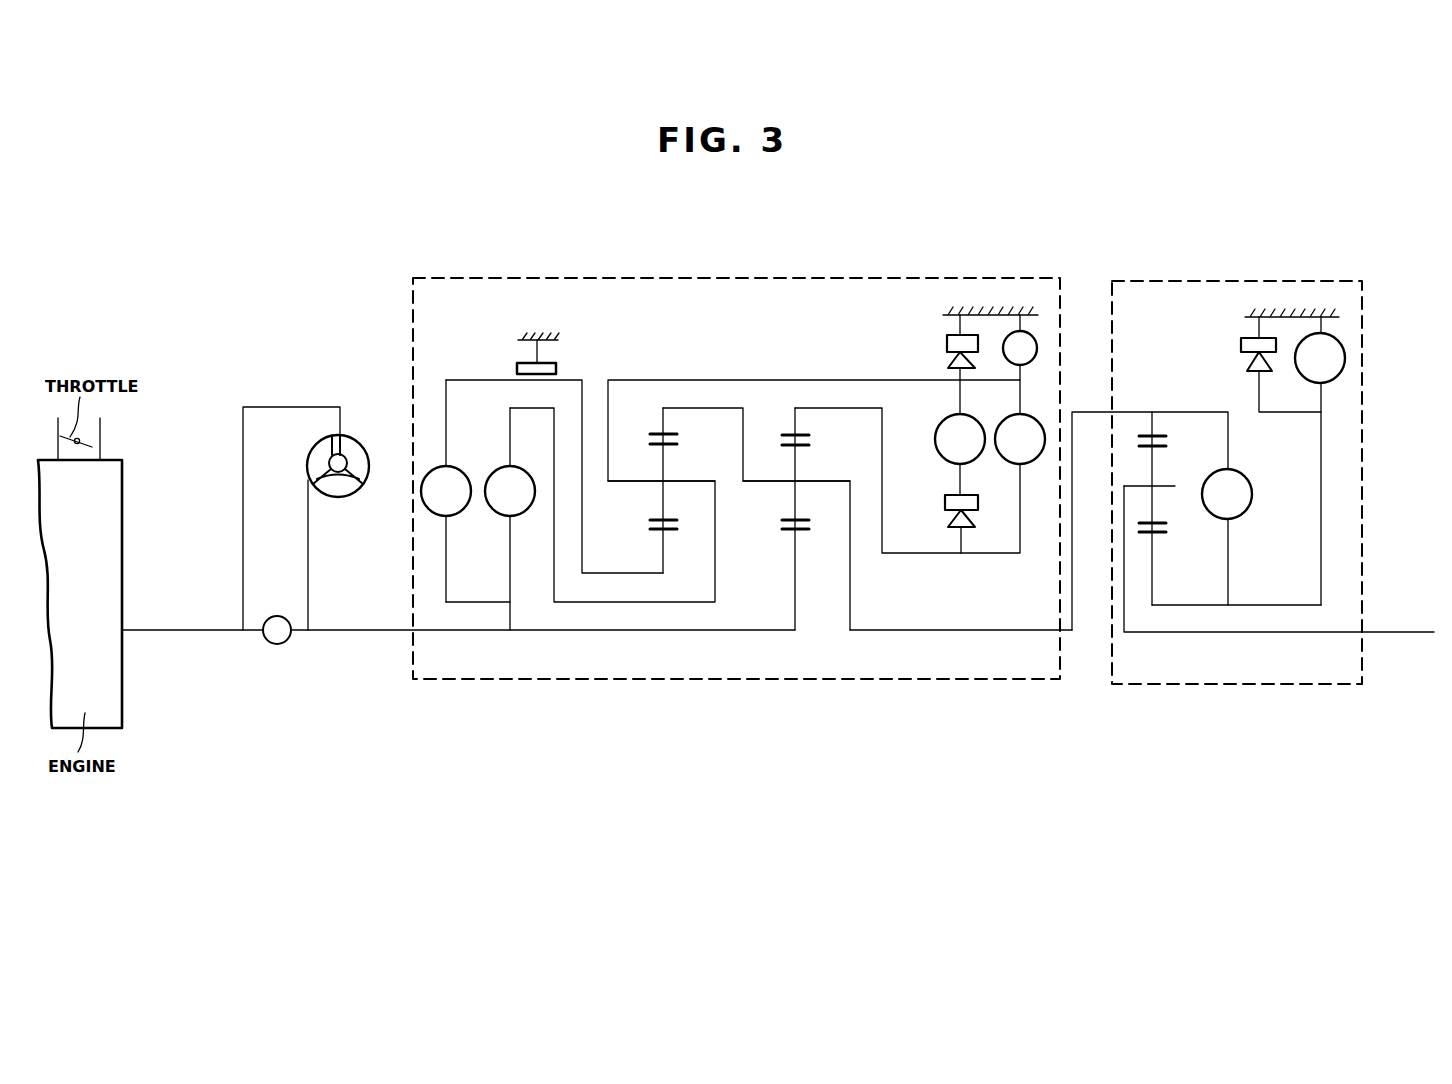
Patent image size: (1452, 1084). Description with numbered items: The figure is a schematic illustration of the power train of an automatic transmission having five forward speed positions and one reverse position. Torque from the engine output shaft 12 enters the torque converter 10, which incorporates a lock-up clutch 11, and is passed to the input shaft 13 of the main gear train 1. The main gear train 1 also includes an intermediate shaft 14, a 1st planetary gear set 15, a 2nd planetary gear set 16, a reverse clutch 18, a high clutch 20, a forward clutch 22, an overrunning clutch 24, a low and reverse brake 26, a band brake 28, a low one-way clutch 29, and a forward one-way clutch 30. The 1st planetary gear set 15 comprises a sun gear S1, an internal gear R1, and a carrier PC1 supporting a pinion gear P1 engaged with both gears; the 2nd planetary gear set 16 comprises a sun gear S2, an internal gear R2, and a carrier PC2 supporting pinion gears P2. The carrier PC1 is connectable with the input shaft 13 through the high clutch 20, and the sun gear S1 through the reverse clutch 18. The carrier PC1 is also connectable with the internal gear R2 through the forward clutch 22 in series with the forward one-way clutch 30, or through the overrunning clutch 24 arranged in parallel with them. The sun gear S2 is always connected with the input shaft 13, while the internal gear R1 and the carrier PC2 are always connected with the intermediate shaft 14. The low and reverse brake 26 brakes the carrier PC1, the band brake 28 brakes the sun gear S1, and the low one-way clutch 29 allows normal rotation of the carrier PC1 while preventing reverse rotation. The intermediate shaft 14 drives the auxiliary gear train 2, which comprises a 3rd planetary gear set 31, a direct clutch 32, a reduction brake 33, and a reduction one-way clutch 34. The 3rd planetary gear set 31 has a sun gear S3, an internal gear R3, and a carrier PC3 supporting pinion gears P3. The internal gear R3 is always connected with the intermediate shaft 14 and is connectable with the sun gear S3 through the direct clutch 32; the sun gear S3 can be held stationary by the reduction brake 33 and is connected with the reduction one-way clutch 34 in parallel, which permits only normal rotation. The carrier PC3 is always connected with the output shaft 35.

The main gear train 1 is at (727, 276).
The auxiliary gear train 2 is at (1261, 280).
The torque converter 10 is at (360, 440).
The lock-up clutch 11 is at (270, 645).
The engine output shaft 12 is at (189, 627).
The input shaft 13 is at (377, 633).
The intermediate shaft 14 is at (912, 630).
The 1st planetary gear set 15 is at (658, 443).
The 2nd planetary gear set 16 is at (795, 471).
The reverse clutch 18 is at (462, 467).
The high clutch 20 is at (500, 520).
The forward clutch 22 is at (942, 462).
The overrunning clutch 24 is at (1027, 464).
The low and reverse brake 26 is at (1023, 366).
The band brake 28 is at (540, 350).
The low one-way clutch 29 is at (945, 342).
The forward one-way clutch 30 is at (947, 503).
The 3rd planetary gear set 31 is at (1167, 473).
The direct clutch 32 is at (1247, 488).
The reduction brake 33 is at (1329, 385).
The reduction one-way clutch 34 is at (1241, 344).
The output shaft 35 is at (1393, 631).
The internal gear R1 is at (667, 422).
The carrier PC1 is at (665, 462).
The pinion gear P1 is at (660, 505).
The sun gear S1 is at (663, 537).
The internal gear R2 is at (799, 422).
The carrier PC2 is at (799, 462).
The pinion gears P2 is at (792, 510).
The sun gear S2 is at (797, 542).
The internal gear R3 is at (1161, 436).
The carrier PC3 is at (1167, 468).
The pinion gears P3 is at (1154, 516).
The sun gear S3 is at (1154, 541).